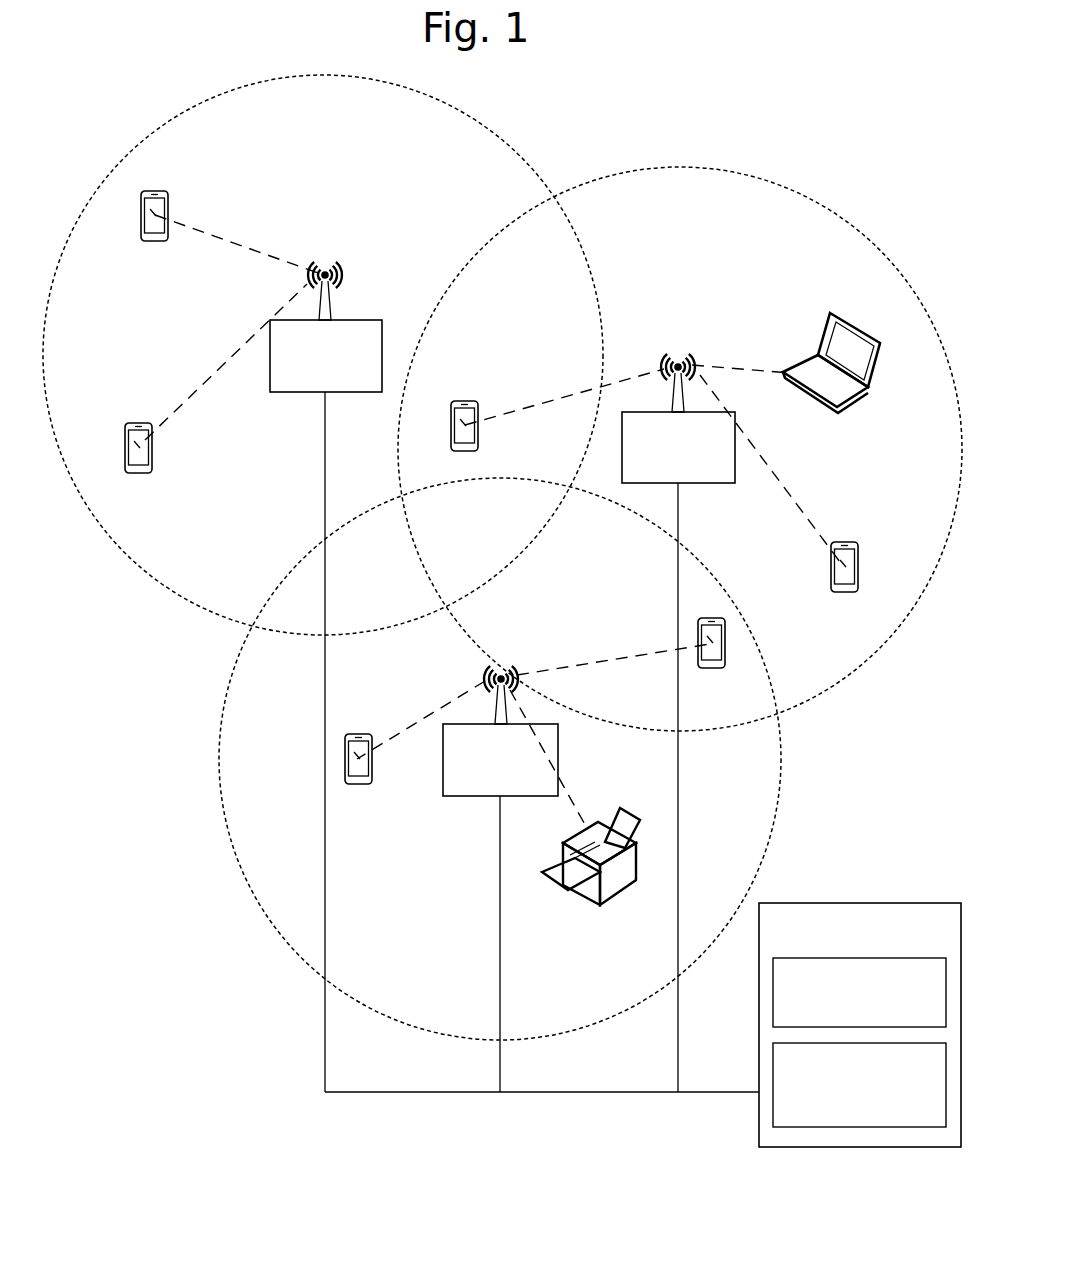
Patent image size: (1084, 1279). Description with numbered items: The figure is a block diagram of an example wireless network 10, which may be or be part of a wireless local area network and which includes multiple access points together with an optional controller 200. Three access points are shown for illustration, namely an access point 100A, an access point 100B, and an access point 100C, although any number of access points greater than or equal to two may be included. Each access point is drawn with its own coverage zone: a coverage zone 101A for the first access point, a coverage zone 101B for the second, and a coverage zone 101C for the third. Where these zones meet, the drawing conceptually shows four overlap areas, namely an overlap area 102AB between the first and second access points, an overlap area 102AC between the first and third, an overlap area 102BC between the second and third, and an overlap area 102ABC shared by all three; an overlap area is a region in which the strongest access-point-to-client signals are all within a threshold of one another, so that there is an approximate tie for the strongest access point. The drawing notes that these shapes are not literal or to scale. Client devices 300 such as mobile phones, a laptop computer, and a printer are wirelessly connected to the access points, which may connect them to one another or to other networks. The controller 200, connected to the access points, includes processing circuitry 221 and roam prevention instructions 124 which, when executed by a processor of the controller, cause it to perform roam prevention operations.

The wireless network 10 is at (752, 105).
The coverage zone of AP 100A 101A is at (510, 152).
The coverage zone of AP 100B 101B is at (838, 221).
The coverage zone of AP 100C 101C is at (256, 905).
The AP overlap area 102AB is at (514, 350).
The AP overlap area 102AC is at (354, 600).
The AP overlap area 102ABC is at (472, 552).
The AP overlap area 102BC is at (622, 635).
The access point 100A is at (326, 677).
The access point 100B is at (678, 723).
The access point 100C is at (500, 879).
The controller 200 is at (860, 1025).
The processing circuitry 221 is at (859, 992).
The roam prevention instructions 124 is at (859, 1085).
The client devices 300 is at (168, 196).